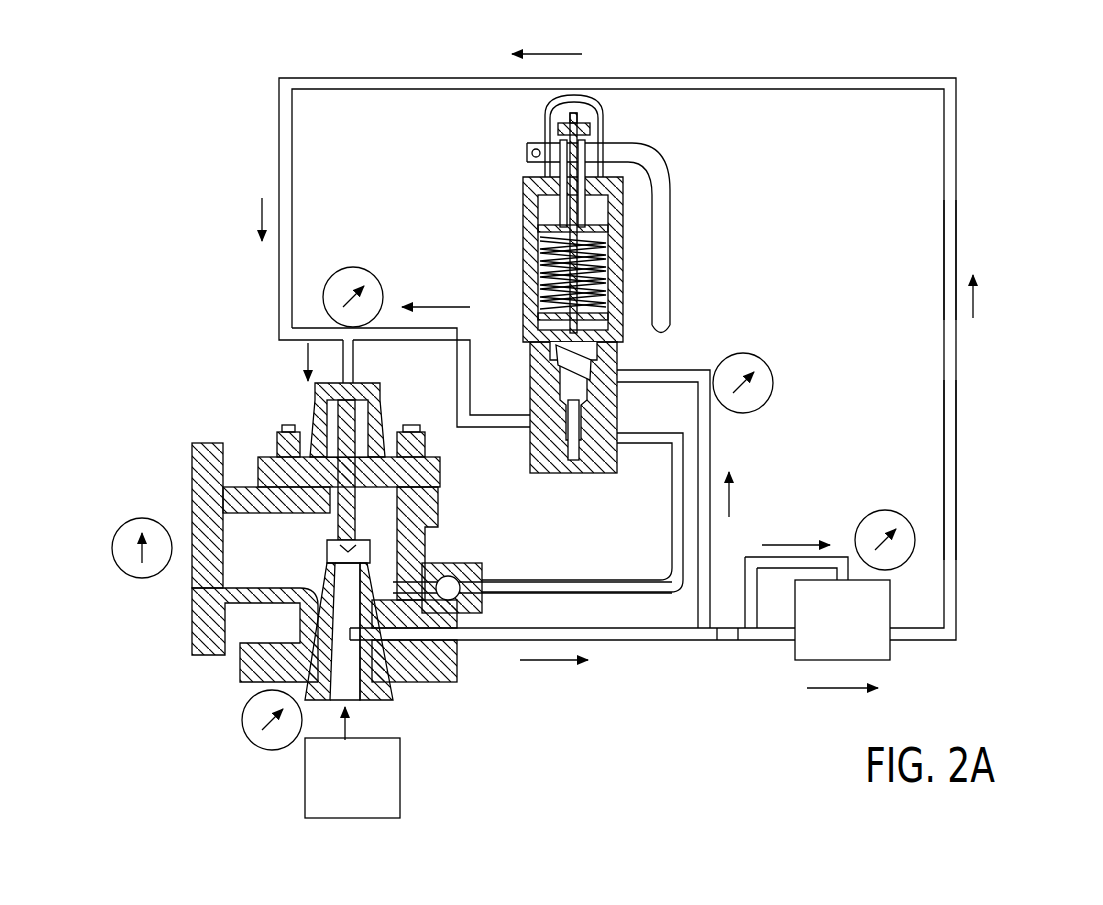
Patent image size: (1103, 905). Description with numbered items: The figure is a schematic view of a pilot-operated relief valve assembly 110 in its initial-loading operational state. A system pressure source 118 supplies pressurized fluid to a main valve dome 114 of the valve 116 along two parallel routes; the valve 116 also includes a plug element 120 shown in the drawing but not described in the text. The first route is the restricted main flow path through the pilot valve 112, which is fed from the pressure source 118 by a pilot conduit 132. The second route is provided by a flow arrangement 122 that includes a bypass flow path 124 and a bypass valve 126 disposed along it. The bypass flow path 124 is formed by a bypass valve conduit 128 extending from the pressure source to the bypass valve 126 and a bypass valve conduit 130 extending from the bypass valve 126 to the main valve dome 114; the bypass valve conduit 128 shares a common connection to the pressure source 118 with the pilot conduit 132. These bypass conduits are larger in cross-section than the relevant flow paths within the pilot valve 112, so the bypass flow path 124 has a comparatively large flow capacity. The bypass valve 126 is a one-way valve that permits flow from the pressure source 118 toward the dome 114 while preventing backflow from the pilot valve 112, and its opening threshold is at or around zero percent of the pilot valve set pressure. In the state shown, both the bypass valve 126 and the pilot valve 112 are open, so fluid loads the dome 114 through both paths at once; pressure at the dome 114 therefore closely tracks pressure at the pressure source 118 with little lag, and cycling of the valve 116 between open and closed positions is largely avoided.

The pilot-operated relief valve assembly 110 is at (198, 172).
The pilot valve 112 is at (505, 238).
The main valve dome 114 is at (330, 408).
The valve 116 is at (243, 433).
The system pressure source 118 is at (320, 790).
The valve plug 120 is at (357, 690).
The flow arrangement 122 is at (980, 120).
The bypass flow path 124 is at (965, 455).
The bypass valve 126 is at (870, 652).
The bypass valve conduit 128 is at (730, 640).
The bypass valve conduit 130 is at (942, 290).
The pilot conduit 132 is at (710, 432).